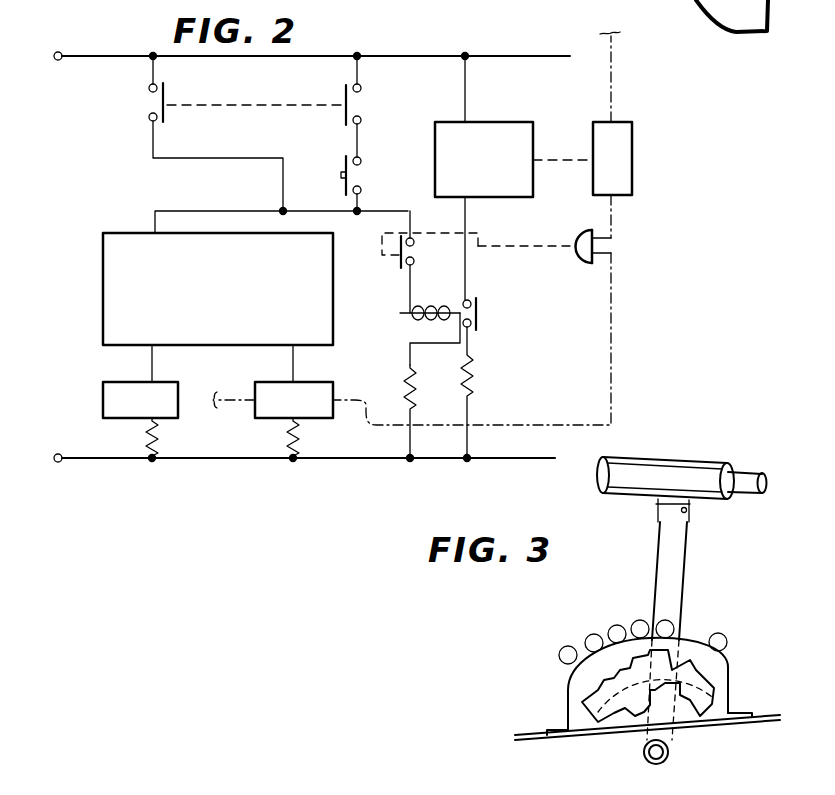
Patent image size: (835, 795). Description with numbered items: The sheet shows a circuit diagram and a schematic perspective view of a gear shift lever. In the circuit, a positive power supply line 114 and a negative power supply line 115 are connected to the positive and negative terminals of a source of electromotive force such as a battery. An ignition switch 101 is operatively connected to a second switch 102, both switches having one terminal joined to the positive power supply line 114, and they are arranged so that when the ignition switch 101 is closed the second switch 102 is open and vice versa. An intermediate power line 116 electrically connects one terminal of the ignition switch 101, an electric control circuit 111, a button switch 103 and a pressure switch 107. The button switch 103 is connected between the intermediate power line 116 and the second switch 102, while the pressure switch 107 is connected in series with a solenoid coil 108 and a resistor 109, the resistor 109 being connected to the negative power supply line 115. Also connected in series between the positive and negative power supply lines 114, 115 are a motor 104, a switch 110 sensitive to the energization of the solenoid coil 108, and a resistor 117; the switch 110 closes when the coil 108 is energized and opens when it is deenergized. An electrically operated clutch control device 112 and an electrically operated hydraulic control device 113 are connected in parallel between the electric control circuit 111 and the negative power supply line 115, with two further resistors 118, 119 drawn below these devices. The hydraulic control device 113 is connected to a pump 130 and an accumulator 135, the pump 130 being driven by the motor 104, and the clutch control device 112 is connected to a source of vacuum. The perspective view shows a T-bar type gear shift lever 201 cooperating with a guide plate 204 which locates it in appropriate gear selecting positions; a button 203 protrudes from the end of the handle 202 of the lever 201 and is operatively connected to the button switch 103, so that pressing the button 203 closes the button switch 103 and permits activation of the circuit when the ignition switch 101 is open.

In FIG. 2, the ignition switch 101 is at (148, 100).
In FIG. 2, the second switch 102 is at (360, 104).
In FIG. 2, the button switch 103 is at (360, 178).
In FIG. 2, the motor 104 is at (535, 132).
In FIG. 2, the pressure switch 107 is at (414, 254).
In FIG. 2, the solenoid coil 108 is at (405, 312).
In FIG. 2, the resistor 109 is at (403, 390).
In FIG. 2, the switch 110 is at (478, 313).
In FIG. 2, the electric control circuit 111 is at (103, 256).
In FIG. 2, the electrically operated clutch control device 112 is at (128, 381).
In FIG. 2, the electrically operated hydraulic control device 113 is at (277, 381).
In FIG. 2, the positive power supply line 114 is at (406, 55).
In FIG. 2, the negative power supply line 115 is at (232, 437).
In FIG. 2, the intermediate power line 116 is at (247, 211).
In FIG. 2, the resistor 117 is at (474, 383).
In FIG. 2, the resistor 118 is at (160, 435).
In FIG. 2, the resistor 119 is at (301, 435).
In FIG. 2, the pump 130 is at (634, 146).
In FIG. 2, the accumulator 135 is at (578, 234).
In FIG. 3, the gear shift lever 201 is at (677, 558).
In FIG. 3, the handle 202 is at (666, 462).
In FIG. 3, the button 203 is at (746, 470).
In FIG. 3, the guide plate 204 is at (566, 698).